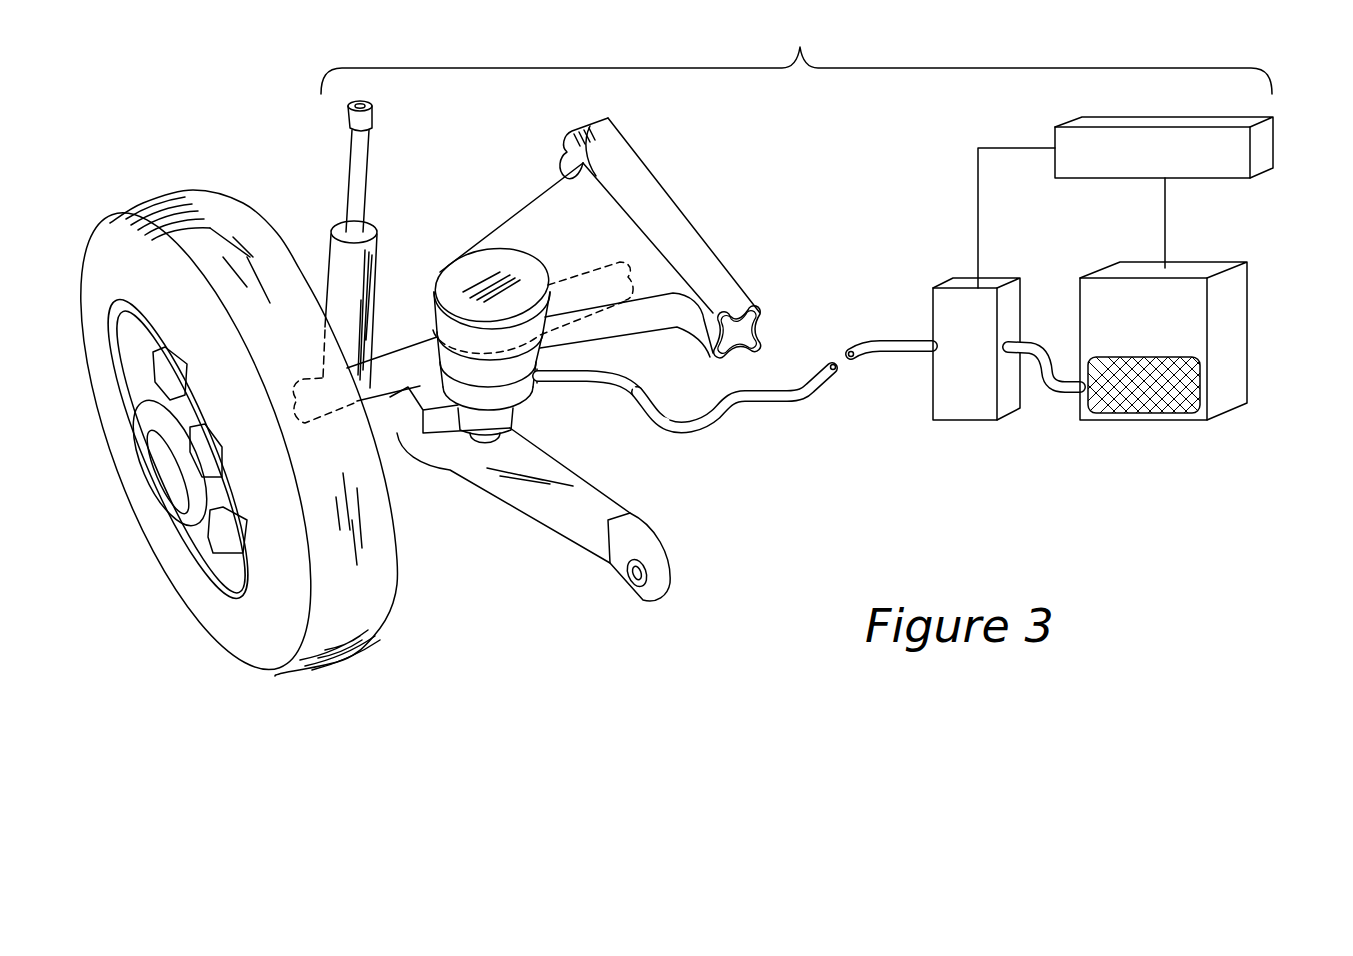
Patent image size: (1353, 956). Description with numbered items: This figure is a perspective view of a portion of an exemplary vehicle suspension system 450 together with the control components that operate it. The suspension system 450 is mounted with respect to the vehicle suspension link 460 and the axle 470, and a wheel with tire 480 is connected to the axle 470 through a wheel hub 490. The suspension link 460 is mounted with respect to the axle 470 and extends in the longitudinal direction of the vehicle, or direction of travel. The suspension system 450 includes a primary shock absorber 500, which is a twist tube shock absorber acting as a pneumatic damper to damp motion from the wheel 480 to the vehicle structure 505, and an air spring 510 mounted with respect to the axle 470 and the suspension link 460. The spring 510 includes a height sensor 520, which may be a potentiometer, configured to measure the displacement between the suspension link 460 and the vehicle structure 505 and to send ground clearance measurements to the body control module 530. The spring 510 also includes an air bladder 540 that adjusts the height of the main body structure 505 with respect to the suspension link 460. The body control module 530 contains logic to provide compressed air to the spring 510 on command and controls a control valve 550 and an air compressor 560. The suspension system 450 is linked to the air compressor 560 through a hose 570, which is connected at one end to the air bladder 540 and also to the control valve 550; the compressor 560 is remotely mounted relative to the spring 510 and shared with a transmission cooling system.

The vehicle suspension system 450 is at (796, 55).
The vehicle suspension link 460 is at (527, 457).
The axle 470 is at (410, 350).
The wheel with tire 480 is at (203, 203).
The wheel hub 490 is at (160, 462).
The primary shock absorber 500 is at (350, 175).
The vehicle structure 505 is at (553, 200).
The air spring 510 is at (460, 270).
The height sensor 520 is at (482, 438).
The body control module 530 is at (1243, 152).
The air bladder 540 is at (550, 378).
The control valve 550 is at (988, 412).
The air compressor 560 is at (1167, 331).
The hose 570 is at (737, 391).